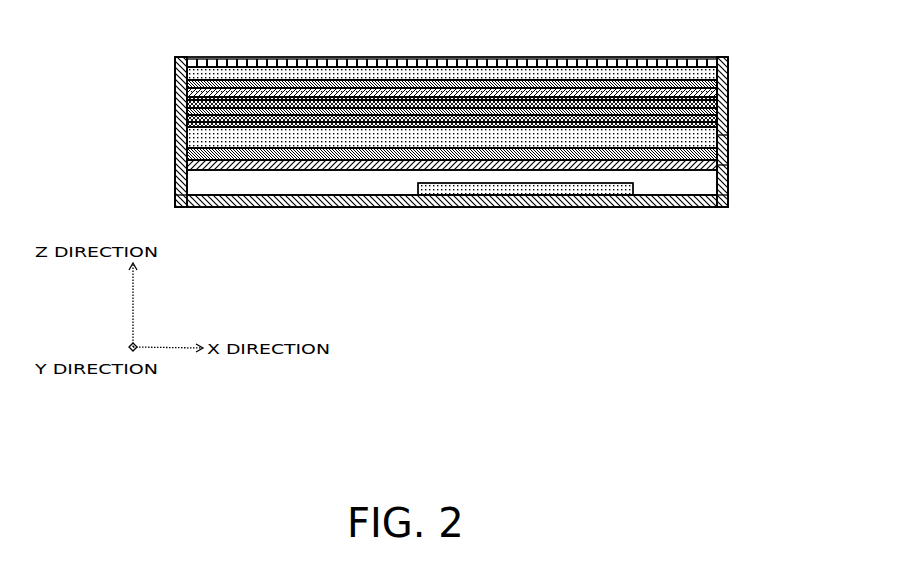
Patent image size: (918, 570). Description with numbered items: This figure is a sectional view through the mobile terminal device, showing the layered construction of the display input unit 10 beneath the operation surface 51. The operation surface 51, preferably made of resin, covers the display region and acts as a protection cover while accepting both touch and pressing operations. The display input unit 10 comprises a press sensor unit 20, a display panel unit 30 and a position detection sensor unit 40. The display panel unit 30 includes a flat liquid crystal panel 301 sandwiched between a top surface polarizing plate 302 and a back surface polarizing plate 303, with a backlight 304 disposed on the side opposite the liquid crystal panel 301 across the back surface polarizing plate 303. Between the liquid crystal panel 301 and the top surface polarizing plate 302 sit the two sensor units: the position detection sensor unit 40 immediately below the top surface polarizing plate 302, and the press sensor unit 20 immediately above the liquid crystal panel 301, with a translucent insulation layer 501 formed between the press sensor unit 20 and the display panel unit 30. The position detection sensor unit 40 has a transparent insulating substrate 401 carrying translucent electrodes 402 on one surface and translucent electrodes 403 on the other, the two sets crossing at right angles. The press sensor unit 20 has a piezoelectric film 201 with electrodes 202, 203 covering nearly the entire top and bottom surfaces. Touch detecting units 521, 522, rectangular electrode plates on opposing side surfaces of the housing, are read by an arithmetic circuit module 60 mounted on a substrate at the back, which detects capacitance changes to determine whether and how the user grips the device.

The display input unit 10 is at (647, 63).
The press sensor unit 20 is at (781, 90).
The piezoelectric film 201 is at (718, 127).
The electrode 202 is at (718, 109).
The electrode 203 is at (719, 151).
The display panel unit 30 is at (775, 240).
The liquid crystal panel 301 is at (719, 163).
The top surface polarizing plate 302 is at (724, 63).
The back surface polarizing plate 303 is at (719, 178).
The backlight 304 is at (725, 198).
The position detection sensor unit 40 is at (138, 66).
The insulating substrate 401 is at (187, 90).
The translucent electrode 402 is at (187, 73).
The translucent electrode 403 is at (187, 106).
The operation surface 51 is at (208, 62).
The translucent insulation layer 501 is at (717, 97).
The touch detecting unit 521 is at (175, 160).
The touch detecting unit 522 is at (719, 150).
The arithmetic circuit module 60 is at (592, 196).